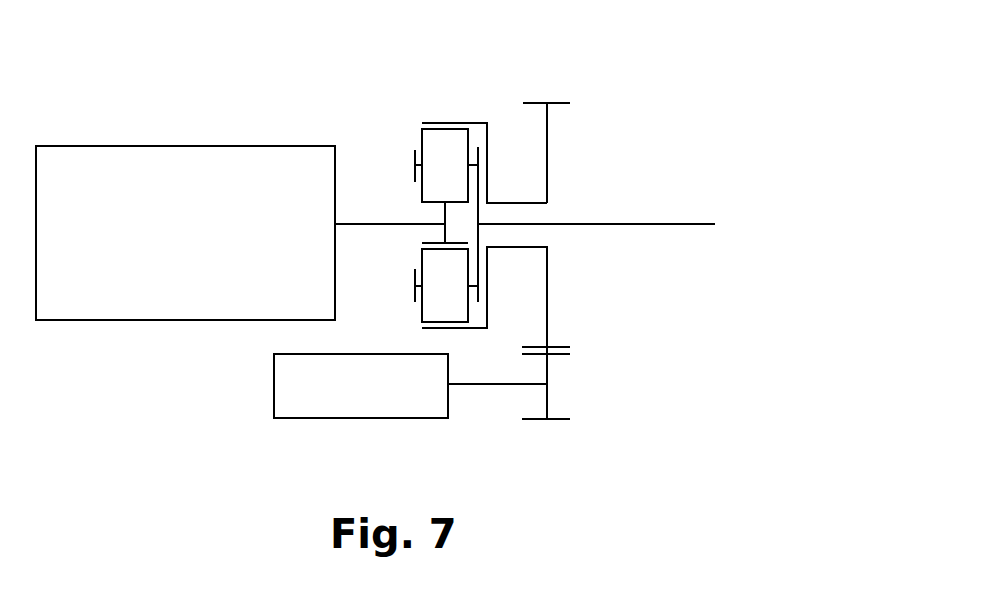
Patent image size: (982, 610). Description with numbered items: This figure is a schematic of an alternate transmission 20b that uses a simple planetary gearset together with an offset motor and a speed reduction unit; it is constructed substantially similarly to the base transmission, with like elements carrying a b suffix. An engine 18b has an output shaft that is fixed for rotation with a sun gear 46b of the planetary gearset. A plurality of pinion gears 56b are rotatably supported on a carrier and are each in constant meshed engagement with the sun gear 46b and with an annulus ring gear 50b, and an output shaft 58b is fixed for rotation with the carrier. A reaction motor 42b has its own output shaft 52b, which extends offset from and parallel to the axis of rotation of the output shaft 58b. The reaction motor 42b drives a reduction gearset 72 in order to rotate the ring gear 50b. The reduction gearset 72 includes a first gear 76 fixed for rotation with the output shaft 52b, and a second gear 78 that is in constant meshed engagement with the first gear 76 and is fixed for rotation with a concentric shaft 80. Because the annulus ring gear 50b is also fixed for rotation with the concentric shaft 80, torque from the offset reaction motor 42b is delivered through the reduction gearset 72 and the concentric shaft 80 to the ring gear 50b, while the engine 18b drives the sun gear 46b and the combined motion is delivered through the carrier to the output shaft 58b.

The engine 18b is at (195, 146).
The alternate transmission 20b is at (668, 71).
The reaction motor 42b is at (273, 382).
The sun gear 46b is at (430, 205).
The annulus ring gear 50b is at (440, 122).
The output shaft 52b is at (500, 384).
The pinion gears 56b is at (432, 142).
The output shaft 58b is at (643, 223).
The reduction gearset 72 is at (553, 85).
The first gear 76 is at (547, 398).
The second gear 78 is at (547, 135).
The concentric shaft 80 is at (503, 202).